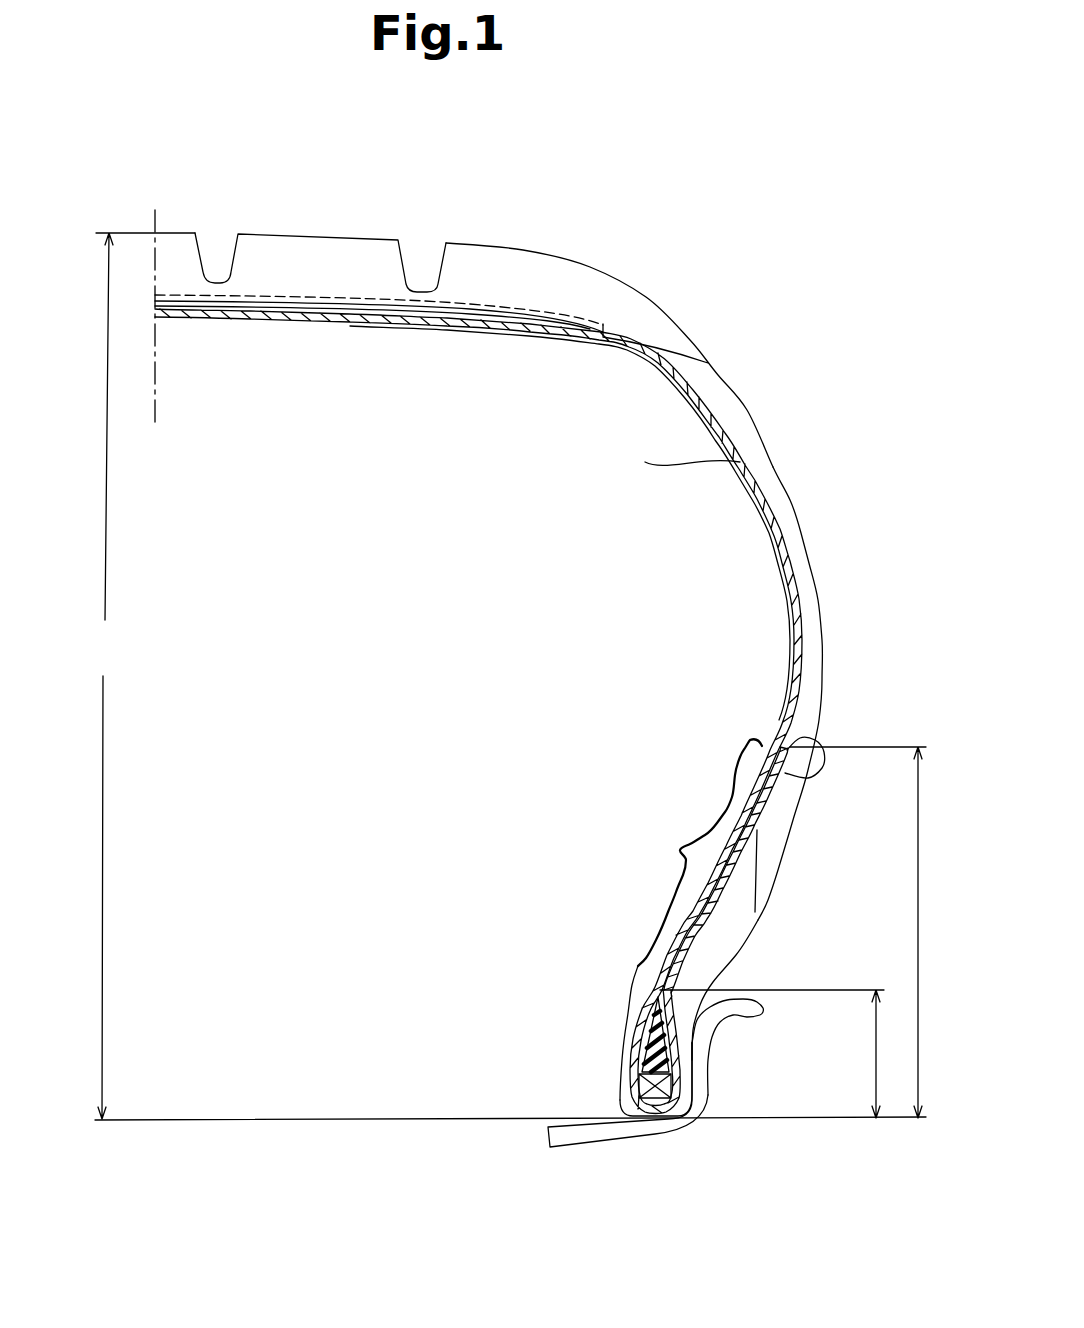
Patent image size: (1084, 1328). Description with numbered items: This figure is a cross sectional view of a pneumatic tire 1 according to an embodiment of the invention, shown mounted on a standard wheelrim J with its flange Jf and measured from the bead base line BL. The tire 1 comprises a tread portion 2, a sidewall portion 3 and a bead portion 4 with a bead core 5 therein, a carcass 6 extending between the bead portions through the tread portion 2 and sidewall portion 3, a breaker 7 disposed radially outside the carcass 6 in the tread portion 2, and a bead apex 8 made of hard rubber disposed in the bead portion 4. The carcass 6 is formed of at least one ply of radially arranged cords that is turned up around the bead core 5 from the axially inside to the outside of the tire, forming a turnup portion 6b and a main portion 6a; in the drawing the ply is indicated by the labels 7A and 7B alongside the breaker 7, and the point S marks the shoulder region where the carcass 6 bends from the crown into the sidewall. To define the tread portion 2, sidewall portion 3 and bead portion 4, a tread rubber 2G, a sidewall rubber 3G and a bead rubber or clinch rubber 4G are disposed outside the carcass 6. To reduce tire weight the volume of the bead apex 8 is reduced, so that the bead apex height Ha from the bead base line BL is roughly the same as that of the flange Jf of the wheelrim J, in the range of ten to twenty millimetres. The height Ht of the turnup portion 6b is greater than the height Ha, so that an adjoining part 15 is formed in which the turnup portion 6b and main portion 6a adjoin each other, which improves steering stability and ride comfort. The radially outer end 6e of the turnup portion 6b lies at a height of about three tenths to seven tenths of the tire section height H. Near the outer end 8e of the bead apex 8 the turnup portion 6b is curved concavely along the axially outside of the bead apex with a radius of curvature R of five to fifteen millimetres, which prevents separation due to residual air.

The pneumatic tire 1 is at (712, 299).
The tread portion 2 is at (318, 251).
The tread rubber 2G is at (498, 265).
The sidewall portion 3 is at (785, 404).
The sidewall rubber 3G is at (778, 807).
The bead portion 4 is at (598, 992).
The bead rubber (clinch rubber) 4G is at (755, 912).
The bead core 5 is at (653, 1092).
The carcass 6 is at (621, 522).
The main portion 6a is at (773, 527).
The turnup portion 6b is at (820, 732).
The radially outer end of the turnup portion 6e is at (752, 732).
The breaker 7 is at (366, 437).
The inner belt ply 7A is at (346, 310).
The outer belt ply 7B is at (292, 300).
The bead apex 8 is at (635, 1037).
The outer end of the bead apex 8e is at (638, 981).
The adjoining part 15 is at (691, 919).
The shoulder point S is at (682, 466).
The radius of curvature R is at (672, 997).
The tire section height H is at (144, 676).
The height of the carcass ply turnup portion Ht is at (863, 932).
The bead apex height Ha is at (774, 1054).
The standard wheelrim J is at (691, 1048).
The flange Jf is at (740, 1006).
The bead base line BL is at (800, 1119).